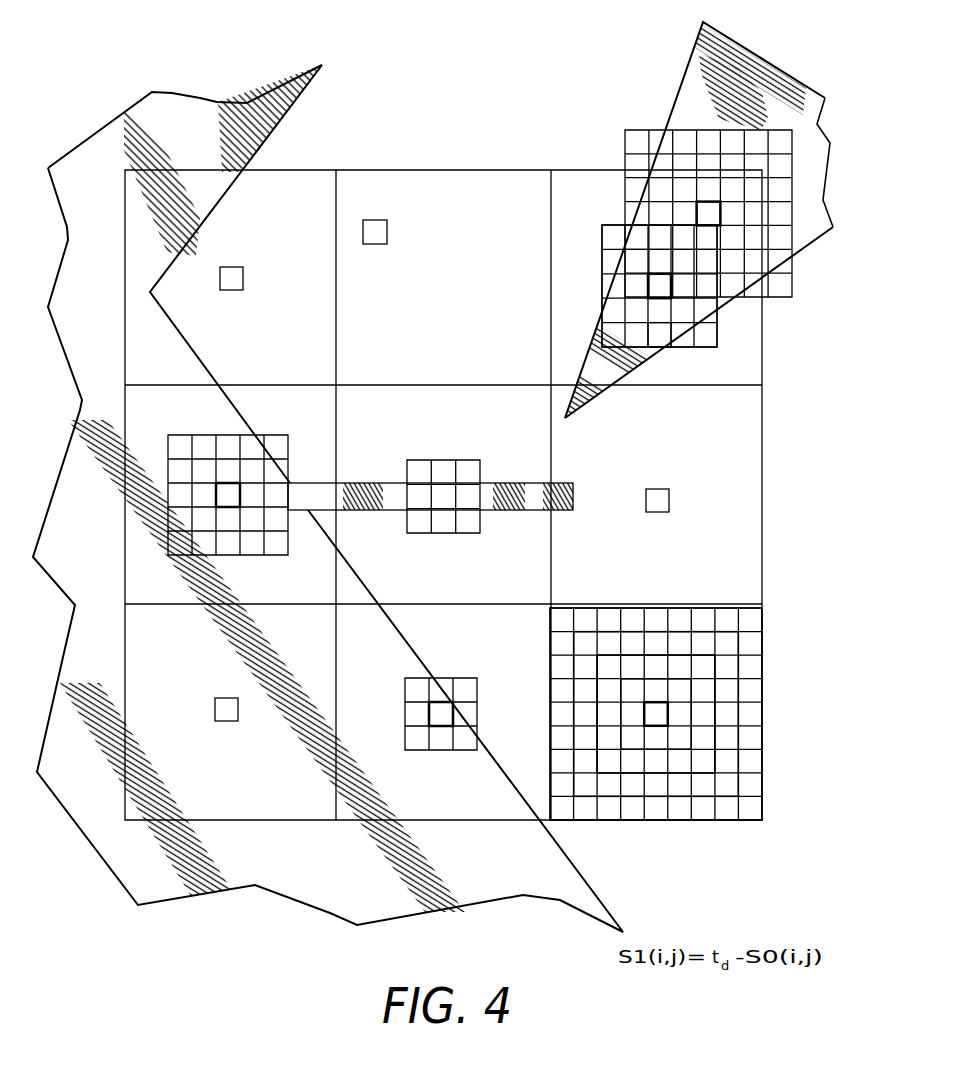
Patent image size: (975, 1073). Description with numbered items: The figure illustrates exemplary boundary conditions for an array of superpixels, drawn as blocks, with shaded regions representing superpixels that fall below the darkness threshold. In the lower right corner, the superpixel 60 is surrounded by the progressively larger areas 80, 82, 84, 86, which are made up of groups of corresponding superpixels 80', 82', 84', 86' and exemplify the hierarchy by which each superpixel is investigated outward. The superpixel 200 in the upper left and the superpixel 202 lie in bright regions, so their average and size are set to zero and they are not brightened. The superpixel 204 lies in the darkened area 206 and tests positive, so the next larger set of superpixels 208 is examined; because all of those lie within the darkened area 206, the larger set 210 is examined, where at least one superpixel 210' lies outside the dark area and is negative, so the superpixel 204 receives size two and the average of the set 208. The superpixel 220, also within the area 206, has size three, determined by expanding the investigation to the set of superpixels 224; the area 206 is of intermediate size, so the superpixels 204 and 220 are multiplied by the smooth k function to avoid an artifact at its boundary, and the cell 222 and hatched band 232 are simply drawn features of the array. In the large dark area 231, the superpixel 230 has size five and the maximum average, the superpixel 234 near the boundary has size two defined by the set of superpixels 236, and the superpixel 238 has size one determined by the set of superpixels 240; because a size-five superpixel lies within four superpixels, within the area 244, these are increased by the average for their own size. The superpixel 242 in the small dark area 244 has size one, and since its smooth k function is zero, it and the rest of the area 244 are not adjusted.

The superpixel 200 is at (233, 267).
The superpixel 202 is at (373, 220).
The superpixel 204 is at (645, 288).
The darkened area 206 is at (678, 92).
The set of superpixels 208 is at (660, 323).
The set of superpixels 210 is at (611, 286).
The superpixel 210' is at (612, 286).
The superpixel 220 is at (697, 215).
The window center pixel 222 is at (767, 240).
The set of superpixels 224 is at (793, 145).
The superpixel 230 is at (214, 704).
The large dark area 231 is at (296, 104).
The hatched band feature 232 is at (333, 800).
The superpixel 234 is at (228, 482).
The set of superpixels 236 is at (311, 416).
The superpixel 238 is at (428, 711).
The set of superpixels 240 is at (495, 661).
The superpixel 242 is at (443, 483).
The small dark area 244 is at (258, 385).
The superpixel 60 is at (657, 730).
The area 80 is at (712, 810).
The area 82 is at (708, 785).
The area 84 is at (702, 760).
The area 86 is at (693, 735).
The superpixels 80' is at (637, 660).
The superpixels 82' is at (656, 672).
The superpixels 84' is at (656, 683).
The superpixels 86' is at (681, 695).